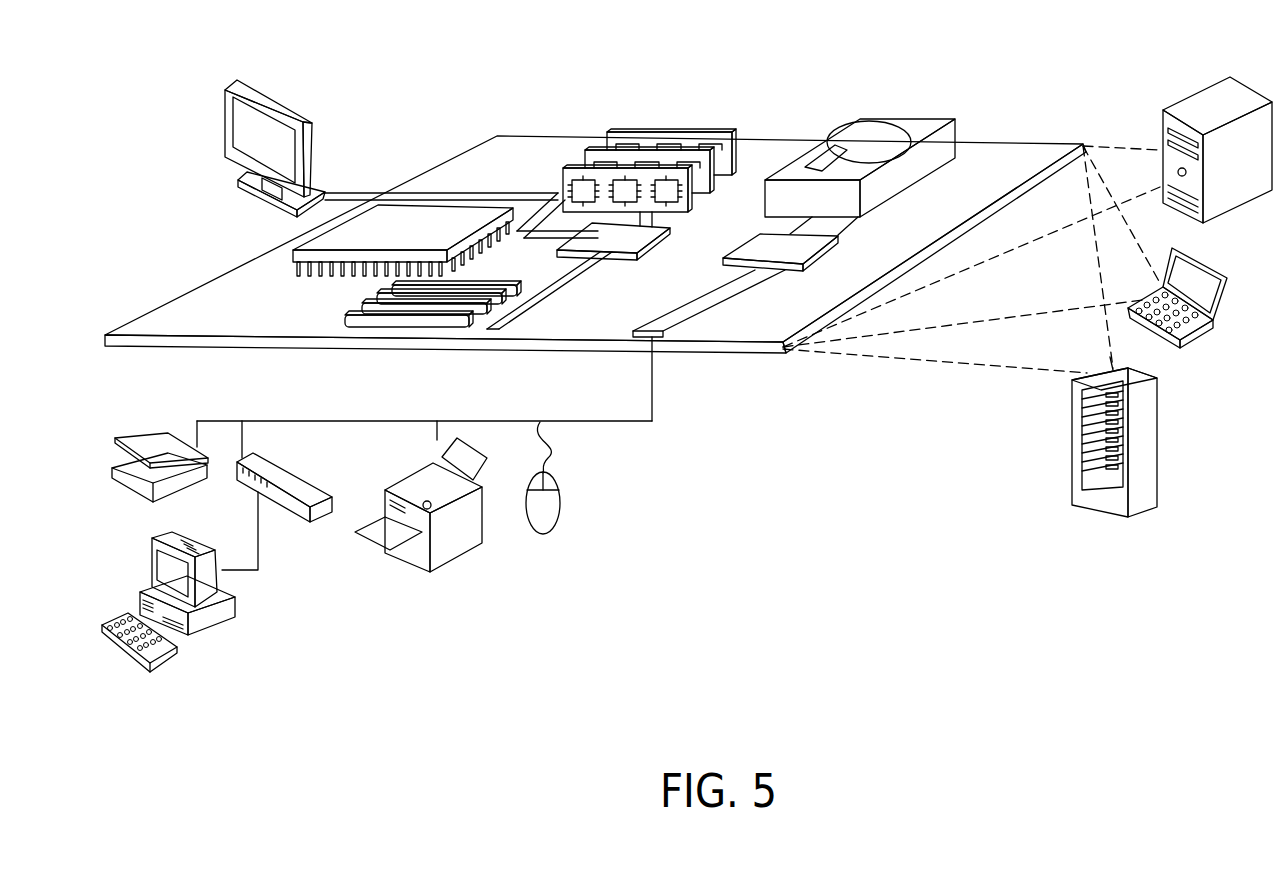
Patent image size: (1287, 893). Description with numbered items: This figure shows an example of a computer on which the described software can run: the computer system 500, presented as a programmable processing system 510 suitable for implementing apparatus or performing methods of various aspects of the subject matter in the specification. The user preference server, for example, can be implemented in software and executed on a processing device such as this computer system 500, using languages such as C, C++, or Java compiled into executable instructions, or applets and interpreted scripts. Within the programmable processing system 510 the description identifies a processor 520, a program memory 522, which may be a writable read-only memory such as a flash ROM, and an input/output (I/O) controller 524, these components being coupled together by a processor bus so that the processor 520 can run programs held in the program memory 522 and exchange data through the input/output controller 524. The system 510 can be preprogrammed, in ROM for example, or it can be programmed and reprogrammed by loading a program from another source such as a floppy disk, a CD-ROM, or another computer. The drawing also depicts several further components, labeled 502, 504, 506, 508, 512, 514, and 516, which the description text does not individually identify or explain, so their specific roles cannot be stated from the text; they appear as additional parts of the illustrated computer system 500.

The computer system 500 is at (419, 106).
The processor 502 is at (293, 251).
The memory modules 504 is at (627, 132).
The disk drive storage 506 is at (853, 121).
The memory controller / chipset 508 is at (590, 238).
The programmable processing system 510 is at (362, 308).
The I/O controller 512 is at (760, 240).
The network connection 514 is at (663, 338).
The display monitor 516 is at (232, 84).
The processor 520 is at (1163, 128).
The program memory 522 is at (1227, 274).
The input/output (I/O) controller 524 is at (1072, 465).